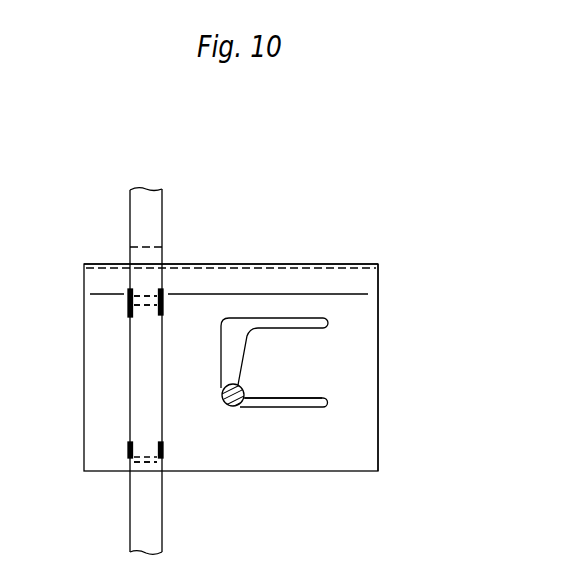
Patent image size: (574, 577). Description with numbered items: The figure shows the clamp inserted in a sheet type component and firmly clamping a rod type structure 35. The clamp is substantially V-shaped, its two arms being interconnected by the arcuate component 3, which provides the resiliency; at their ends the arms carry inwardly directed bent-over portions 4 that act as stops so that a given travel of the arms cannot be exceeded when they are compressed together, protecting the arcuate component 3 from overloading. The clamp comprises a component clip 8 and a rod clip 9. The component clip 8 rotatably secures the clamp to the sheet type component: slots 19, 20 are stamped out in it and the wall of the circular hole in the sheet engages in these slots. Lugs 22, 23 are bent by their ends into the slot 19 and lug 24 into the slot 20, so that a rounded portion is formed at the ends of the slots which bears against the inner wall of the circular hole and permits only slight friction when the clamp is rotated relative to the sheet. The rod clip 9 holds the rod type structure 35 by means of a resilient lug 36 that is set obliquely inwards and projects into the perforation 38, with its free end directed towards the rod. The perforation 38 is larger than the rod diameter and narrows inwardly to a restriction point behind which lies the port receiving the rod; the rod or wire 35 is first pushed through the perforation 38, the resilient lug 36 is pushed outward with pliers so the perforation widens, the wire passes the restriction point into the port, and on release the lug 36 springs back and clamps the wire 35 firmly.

The arcuate component 3 is at (148, 210).
The bent-over portion 4 is at (185, 264).
The component clip 8 is at (84, 401).
The rod clip 9 is at (378, 365).
The slot 19 is at (128, 308).
The slot 20 is at (128, 448).
The lug 22 is at (147, 283).
The lug 23 is at (143, 318).
The lug 24 is at (164, 447).
The rod type structure 35 is at (231, 407).
The resilient lug 36 is at (283, 382).
The perforation 38 is at (233, 340).